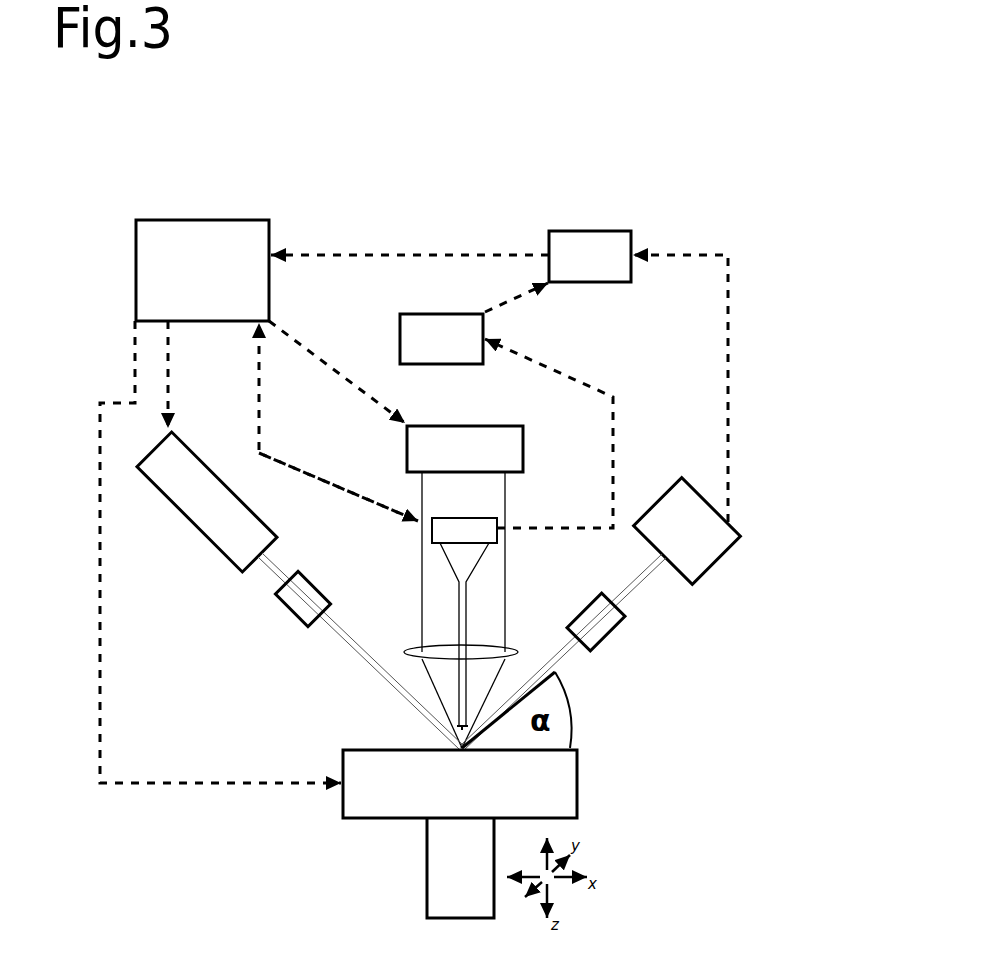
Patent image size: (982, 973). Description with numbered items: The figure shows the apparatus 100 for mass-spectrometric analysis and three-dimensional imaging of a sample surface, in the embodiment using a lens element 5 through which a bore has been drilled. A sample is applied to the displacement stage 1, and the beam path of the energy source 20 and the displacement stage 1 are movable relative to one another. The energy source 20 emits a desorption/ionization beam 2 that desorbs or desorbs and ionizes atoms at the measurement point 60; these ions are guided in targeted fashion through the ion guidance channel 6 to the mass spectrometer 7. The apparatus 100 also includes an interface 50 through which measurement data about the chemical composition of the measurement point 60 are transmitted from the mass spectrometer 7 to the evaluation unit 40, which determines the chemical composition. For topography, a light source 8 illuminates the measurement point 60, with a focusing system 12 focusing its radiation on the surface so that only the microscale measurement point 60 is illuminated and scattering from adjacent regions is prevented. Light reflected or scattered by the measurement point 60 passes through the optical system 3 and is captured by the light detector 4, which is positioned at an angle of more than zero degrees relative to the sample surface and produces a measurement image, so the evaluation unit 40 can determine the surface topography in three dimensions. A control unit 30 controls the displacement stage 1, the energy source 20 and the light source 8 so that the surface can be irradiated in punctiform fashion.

The apparatus 100 is at (267, 206).
The control unit 30 is at (218, 323).
The evaluation unit 40 is at (593, 284).
The interface 50 is at (440, 312).
The energy source 20 is at (405, 446).
The desorption/ionization beam 2 is at (420, 558).
The mass spectrometer 7 is at (489, 519).
The ion guidance channel 6 is at (470, 608).
The lens element with a central bore 5 is at (413, 641).
The light source 8 is at (230, 561).
The focusing system 12 is at (288, 608).
The light detector 4 is at (680, 578).
The optical system 3 is at (605, 641).
The measurement point 60 is at (449, 745).
The displacement stage 1 is at (581, 785).